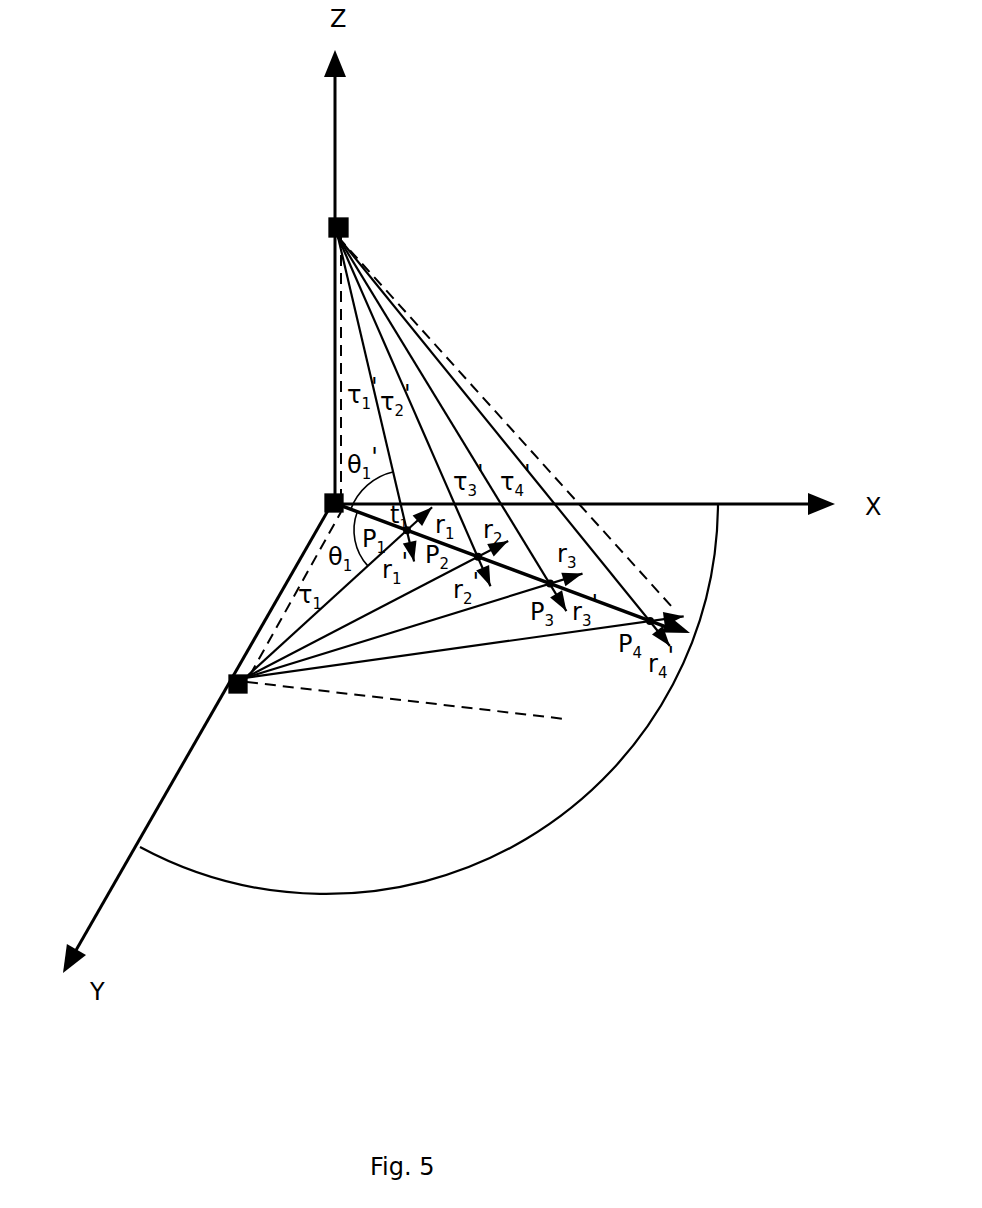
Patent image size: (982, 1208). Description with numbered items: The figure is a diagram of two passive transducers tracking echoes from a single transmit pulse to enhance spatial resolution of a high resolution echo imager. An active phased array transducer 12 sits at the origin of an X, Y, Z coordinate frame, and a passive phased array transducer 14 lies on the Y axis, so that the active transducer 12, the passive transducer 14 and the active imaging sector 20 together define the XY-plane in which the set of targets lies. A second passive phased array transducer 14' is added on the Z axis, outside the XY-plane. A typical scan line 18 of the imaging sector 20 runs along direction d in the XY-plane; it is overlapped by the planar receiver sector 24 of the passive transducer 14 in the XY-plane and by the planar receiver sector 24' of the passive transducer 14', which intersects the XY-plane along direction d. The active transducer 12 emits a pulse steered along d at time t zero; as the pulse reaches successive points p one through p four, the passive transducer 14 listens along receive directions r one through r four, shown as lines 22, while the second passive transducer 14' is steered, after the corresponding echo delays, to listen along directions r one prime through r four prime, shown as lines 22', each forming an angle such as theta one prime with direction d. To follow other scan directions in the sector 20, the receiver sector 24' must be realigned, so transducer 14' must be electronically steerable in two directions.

The active phased array transducer 12 is at (325, 503).
The passive phased array transducer 14 is at (221, 657).
The second passive phased array transducer 14' is at (369, 216).
The scan line 18 is at (632, 607).
The active imaging sector 20 is at (558, 823).
The sight lines from first sensor to target points 22 is at (464, 592).
The sight lines from second sensor to target points 22' is at (504, 441).
The planar receiver sector 24 is at (404, 637).
The planar receiver sector 24' is at (479, 422).